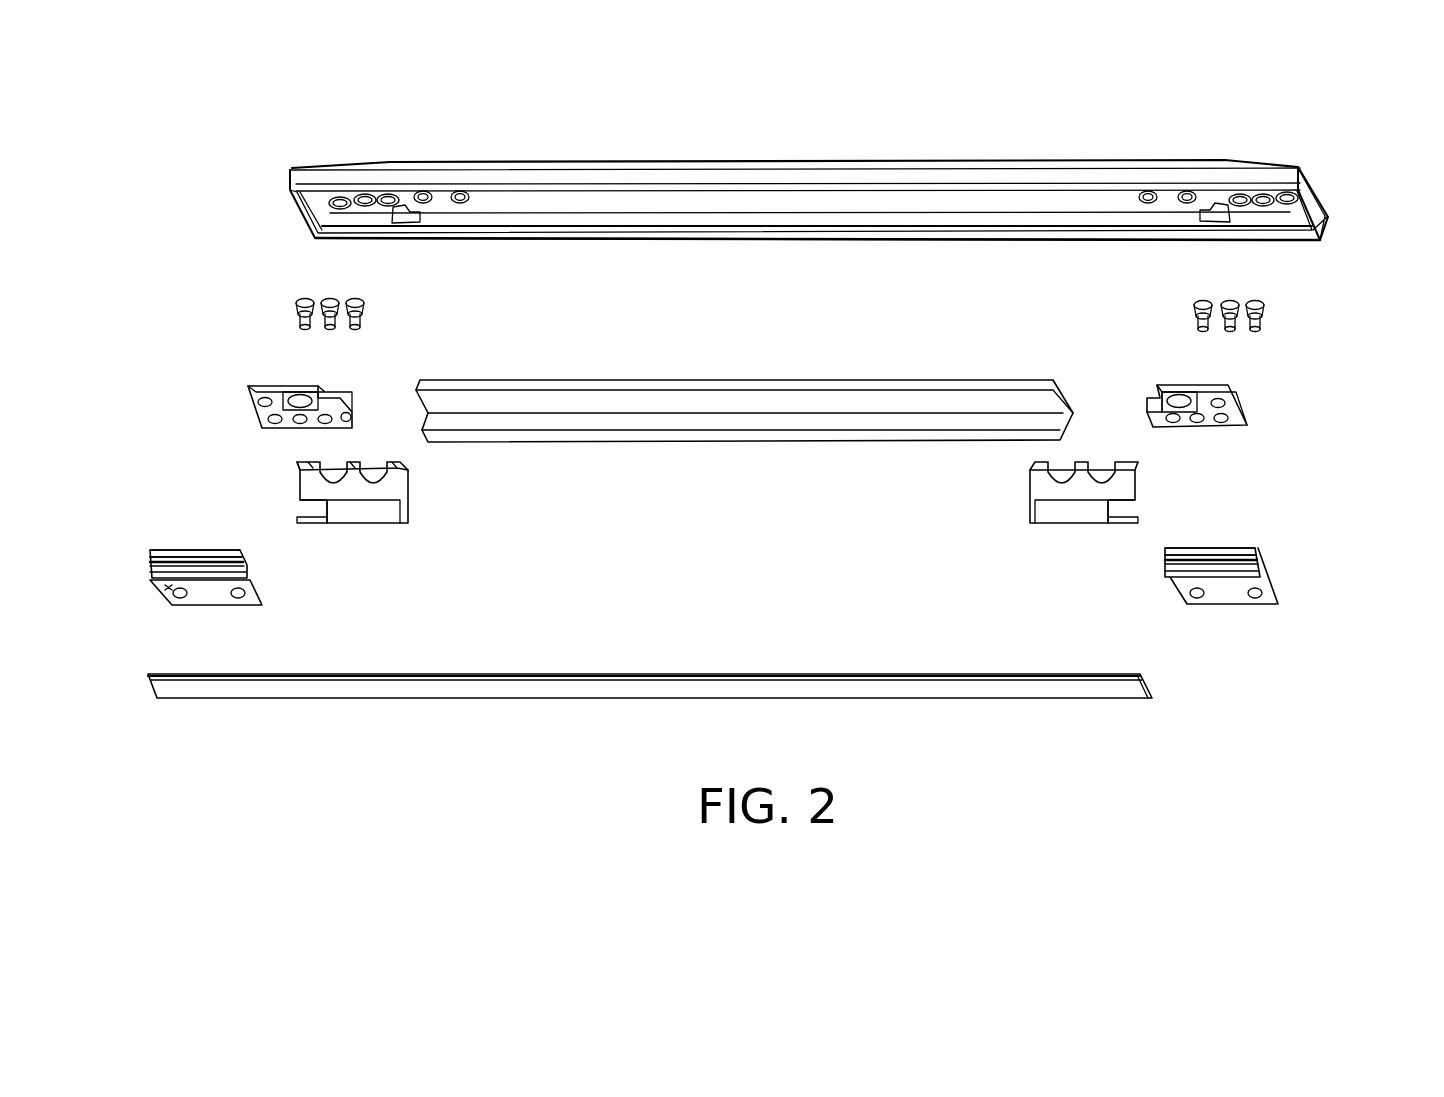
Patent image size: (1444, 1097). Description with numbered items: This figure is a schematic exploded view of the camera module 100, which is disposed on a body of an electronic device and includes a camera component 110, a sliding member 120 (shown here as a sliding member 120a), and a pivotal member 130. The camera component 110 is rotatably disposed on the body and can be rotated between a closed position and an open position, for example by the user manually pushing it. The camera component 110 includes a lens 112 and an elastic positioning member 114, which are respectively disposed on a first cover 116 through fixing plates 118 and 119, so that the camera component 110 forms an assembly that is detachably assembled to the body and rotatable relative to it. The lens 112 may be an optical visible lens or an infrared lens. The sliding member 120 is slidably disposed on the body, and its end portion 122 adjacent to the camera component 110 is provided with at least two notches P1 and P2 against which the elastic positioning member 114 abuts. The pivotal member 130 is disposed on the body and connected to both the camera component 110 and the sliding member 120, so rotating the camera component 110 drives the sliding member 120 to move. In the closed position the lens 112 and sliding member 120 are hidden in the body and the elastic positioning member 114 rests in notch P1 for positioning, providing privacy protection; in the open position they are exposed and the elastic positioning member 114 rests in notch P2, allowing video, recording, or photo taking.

The camera module 100 is at (1347, 757).
The camera component 110 is at (1396, 177).
The lens 112 is at (1147, 690).
The elastic positioning member 114 is at (298, 311).
The first cover 116 is at (932, 178).
The fixing plate 118 is at (960, 400).
The fixing plate 119 is at (250, 406).
The sliding member 120 is at (766, 555).
The hinge 120a is at (212, 600).
The end portion 122 is at (163, 585).
The pivotal member 130 is at (343, 507).
The notch P1 is at (178, 562).
The notch P2 is at (216, 549).